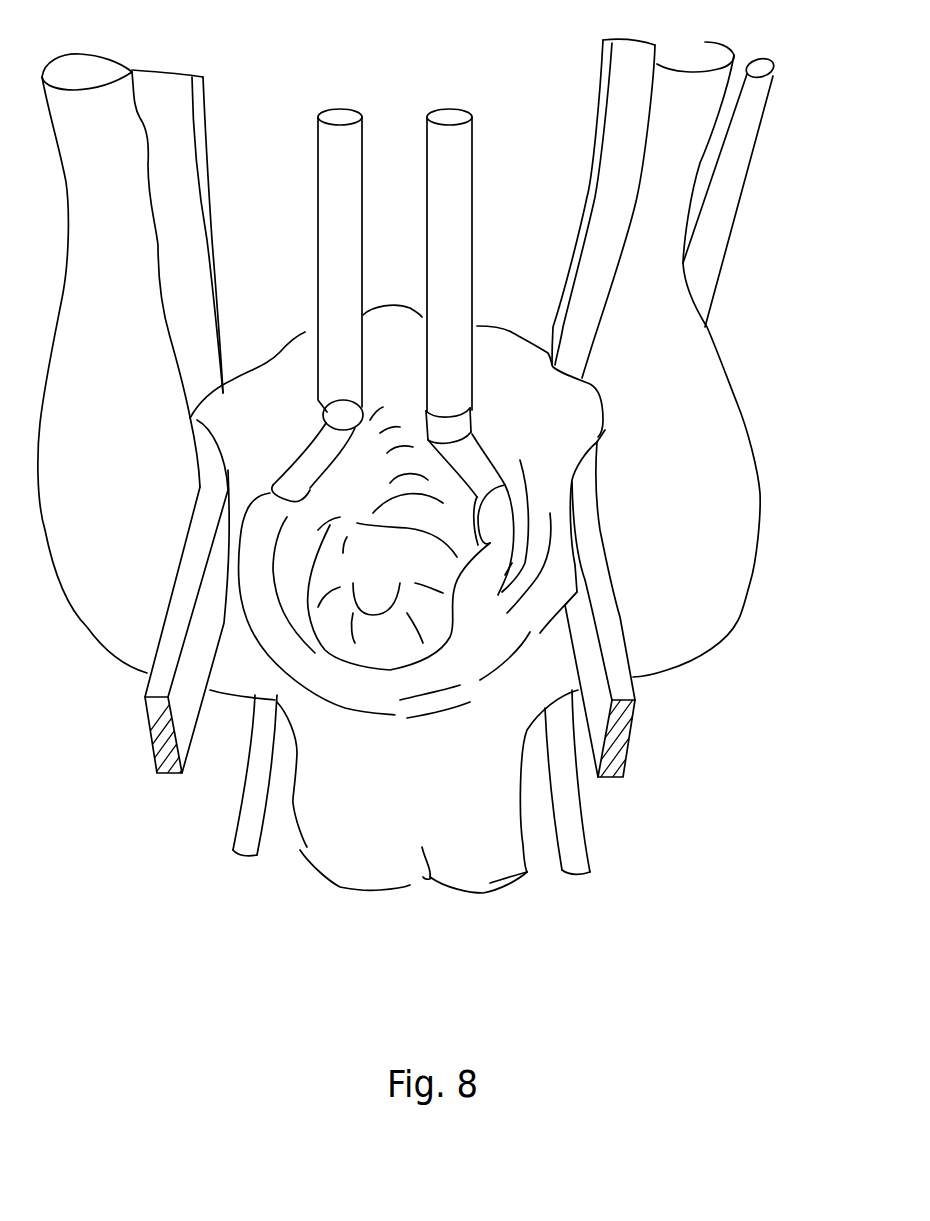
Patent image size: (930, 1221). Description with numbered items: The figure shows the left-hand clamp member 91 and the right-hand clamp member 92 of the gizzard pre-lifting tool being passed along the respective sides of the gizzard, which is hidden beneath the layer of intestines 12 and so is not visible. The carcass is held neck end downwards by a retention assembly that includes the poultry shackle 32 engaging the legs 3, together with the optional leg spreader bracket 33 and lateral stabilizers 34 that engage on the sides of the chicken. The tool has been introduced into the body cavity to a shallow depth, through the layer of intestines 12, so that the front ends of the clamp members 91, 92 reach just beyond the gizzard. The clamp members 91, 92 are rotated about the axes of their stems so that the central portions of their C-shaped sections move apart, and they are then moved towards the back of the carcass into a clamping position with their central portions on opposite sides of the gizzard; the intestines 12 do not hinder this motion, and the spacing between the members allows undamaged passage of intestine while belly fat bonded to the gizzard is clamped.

The leg 3 is at (139, 493).
The intestines 12 is at (373, 563).
The poultry shackle 32 is at (188, 233).
The leg spreader bracket 33 is at (180, 738).
The lateral stabilizers 34 is at (247, 825).
The left-hand clamp member 91 is at (335, 258).
The right-hand clamp member 92 is at (465, 260).